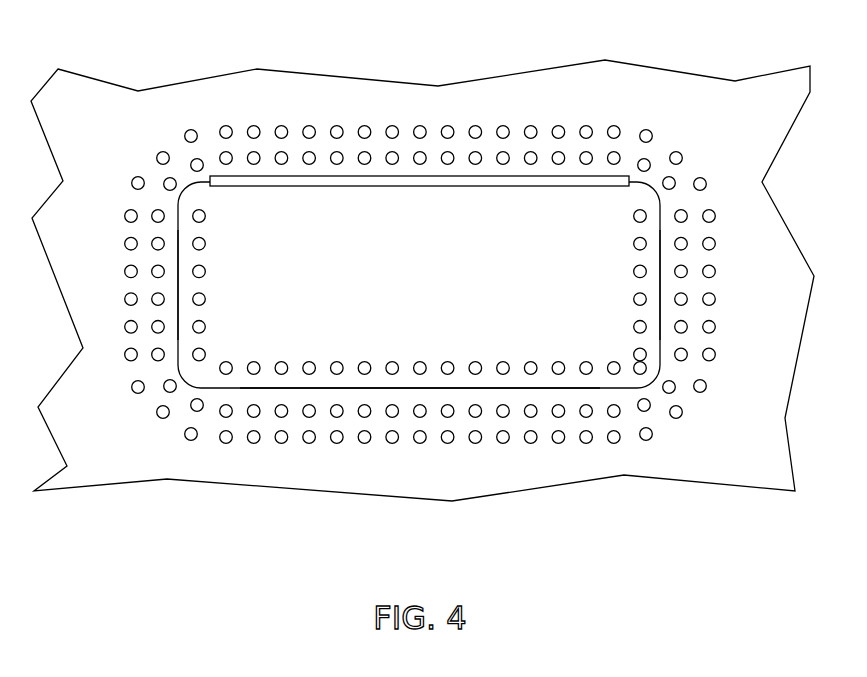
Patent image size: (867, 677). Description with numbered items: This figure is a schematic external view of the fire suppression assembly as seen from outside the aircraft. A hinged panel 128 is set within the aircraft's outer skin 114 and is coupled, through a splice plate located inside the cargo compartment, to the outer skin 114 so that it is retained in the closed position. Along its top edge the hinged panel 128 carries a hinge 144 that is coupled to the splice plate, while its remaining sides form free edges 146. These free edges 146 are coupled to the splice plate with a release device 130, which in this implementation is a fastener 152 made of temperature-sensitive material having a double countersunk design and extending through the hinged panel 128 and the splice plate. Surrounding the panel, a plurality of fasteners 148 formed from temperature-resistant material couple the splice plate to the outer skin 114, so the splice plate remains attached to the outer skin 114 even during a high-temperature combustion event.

The outer skin 114 is at (750, 78).
The hinged panel 128 is at (422, 279).
The release device 130 is at (645, 373).
The hinge 144 is at (548, 187).
The free edges 146 is at (178, 337).
The fasteners 148 is at (159, 417).
The fastener 152 is at (391, 362).